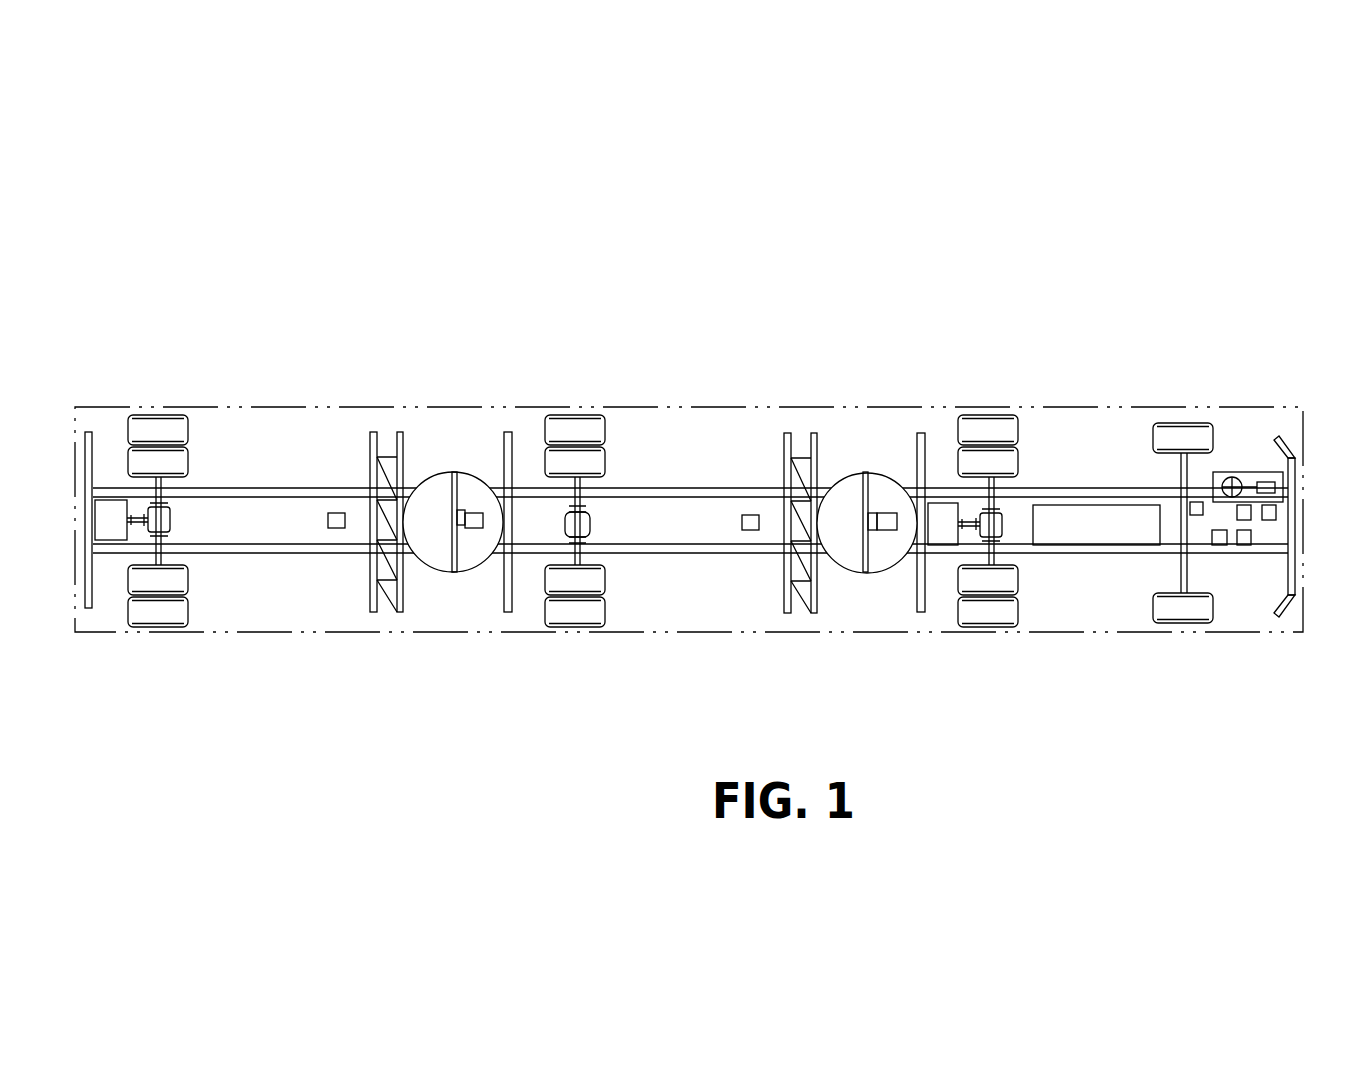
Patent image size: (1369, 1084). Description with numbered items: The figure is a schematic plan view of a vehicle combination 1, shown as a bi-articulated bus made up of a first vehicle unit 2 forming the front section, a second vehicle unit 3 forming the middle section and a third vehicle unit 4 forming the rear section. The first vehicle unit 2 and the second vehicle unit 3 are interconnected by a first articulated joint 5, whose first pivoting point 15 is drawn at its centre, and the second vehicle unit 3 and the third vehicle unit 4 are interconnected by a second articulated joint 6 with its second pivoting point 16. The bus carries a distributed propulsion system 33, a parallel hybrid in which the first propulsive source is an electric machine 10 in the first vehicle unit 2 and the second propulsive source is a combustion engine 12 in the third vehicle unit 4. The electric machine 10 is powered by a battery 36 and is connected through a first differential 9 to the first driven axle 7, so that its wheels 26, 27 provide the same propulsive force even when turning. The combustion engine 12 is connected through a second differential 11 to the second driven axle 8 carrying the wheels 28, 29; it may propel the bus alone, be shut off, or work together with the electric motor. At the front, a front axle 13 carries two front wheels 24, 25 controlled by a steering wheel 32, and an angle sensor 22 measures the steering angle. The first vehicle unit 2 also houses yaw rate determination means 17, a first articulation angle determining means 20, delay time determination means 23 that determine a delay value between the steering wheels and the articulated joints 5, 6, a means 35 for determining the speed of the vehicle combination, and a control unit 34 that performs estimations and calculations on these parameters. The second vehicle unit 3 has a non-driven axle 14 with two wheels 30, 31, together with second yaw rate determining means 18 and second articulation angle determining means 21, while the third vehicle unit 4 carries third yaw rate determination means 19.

The vehicle combination 1 is at (1172, 226).
The first vehicle unit 2 is at (1096, 362).
The second vehicle unit 3 is at (708, 362).
The third vehicle unit 4 is at (269, 362).
The first articulated joint 5 is at (864, 410).
The second articulated joint 6 is at (460, 410).
The first driven axle 7 is at (1003, 563).
The second driven axle 8 is at (165, 562).
The first differential 9 is at (996, 516).
The electric machine 10 is at (940, 515).
The second differential 11 is at (165, 517).
The combustion engine 12 is at (112, 510).
The front axle 13 is at (1188, 573).
The non-driven axle 14 is at (582, 562).
The first pivoting point 15 is at (868, 530).
The second pivoting point 16 is at (462, 528).
The yaw rate determination means 17 is at (1270, 521).
The second yaw rate determining means 18 is at (750, 531).
The third yaw rate determination means 19 is at (337, 529).
The first articulation angle determining means 20 is at (888, 530).
The second articulation angle determining means 21 is at (476, 528).
The angle sensor 22 is at (1198, 505).
The delay time determination means 23 is at (1245, 521).
The front wheel 24 is at (1185, 617).
The front wheel 25 is at (1185, 437).
The wheel of first driven axle 26 is at (990, 612).
The wheel of first driven axle 27 is at (985, 430).
The wheel of second driven axle 28 is at (158, 612).
The wheel of second driven axle 29 is at (157, 427).
The wheel of non-driven axle 30 is at (575, 612).
The wheel of non-driven axle 31 is at (578, 428).
The steering wheel 32 is at (1247, 472).
The distributed propulsion system 33 is at (669, 227).
The control unit 34 is at (1223, 546).
The means for determining the speed 35 is at (1243, 546).
The battery 36 is at (1097, 523).